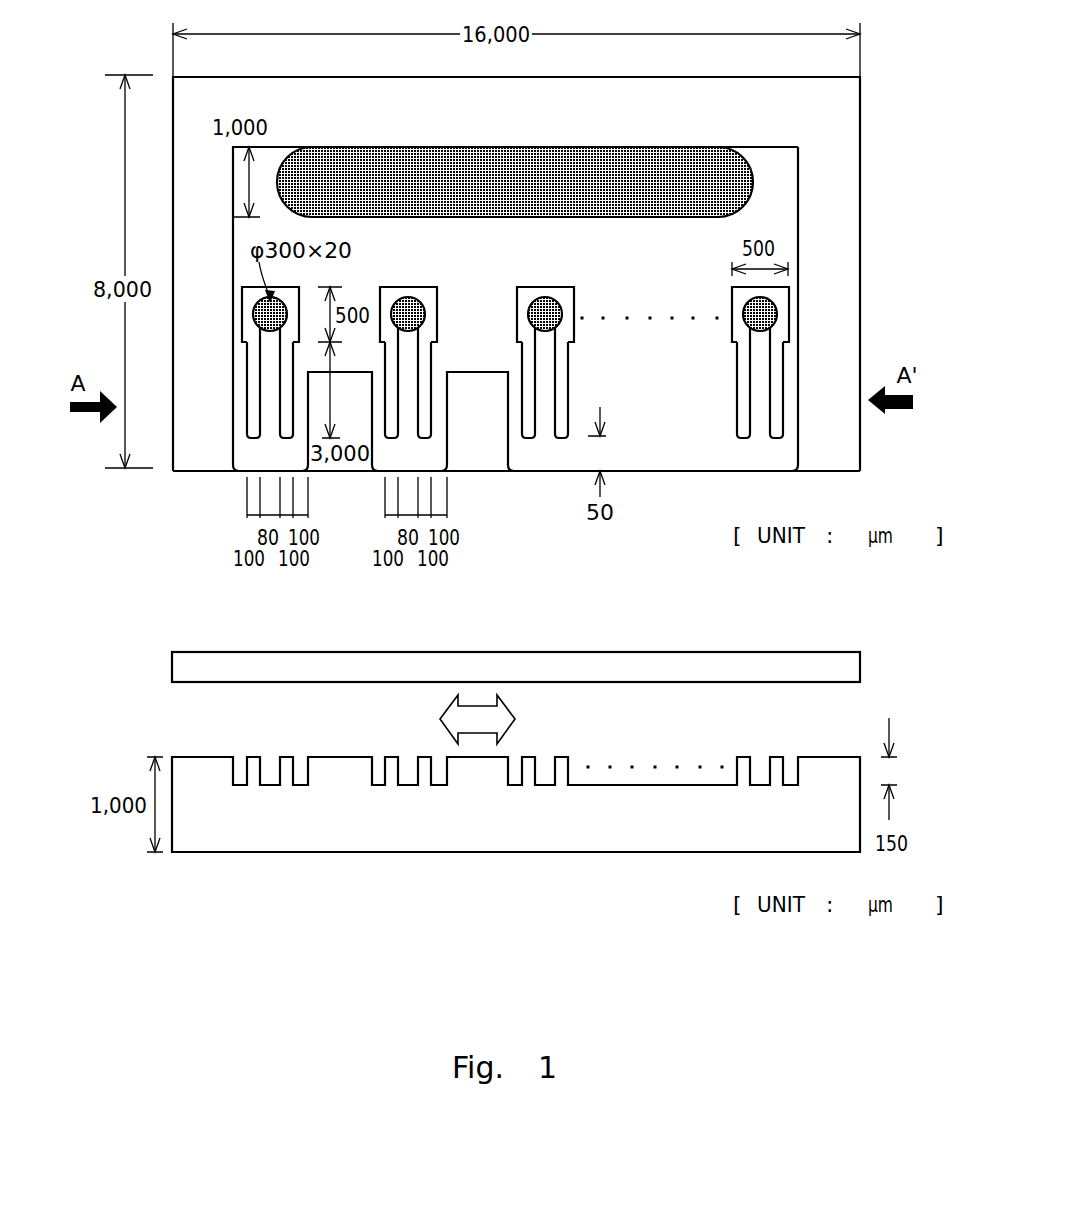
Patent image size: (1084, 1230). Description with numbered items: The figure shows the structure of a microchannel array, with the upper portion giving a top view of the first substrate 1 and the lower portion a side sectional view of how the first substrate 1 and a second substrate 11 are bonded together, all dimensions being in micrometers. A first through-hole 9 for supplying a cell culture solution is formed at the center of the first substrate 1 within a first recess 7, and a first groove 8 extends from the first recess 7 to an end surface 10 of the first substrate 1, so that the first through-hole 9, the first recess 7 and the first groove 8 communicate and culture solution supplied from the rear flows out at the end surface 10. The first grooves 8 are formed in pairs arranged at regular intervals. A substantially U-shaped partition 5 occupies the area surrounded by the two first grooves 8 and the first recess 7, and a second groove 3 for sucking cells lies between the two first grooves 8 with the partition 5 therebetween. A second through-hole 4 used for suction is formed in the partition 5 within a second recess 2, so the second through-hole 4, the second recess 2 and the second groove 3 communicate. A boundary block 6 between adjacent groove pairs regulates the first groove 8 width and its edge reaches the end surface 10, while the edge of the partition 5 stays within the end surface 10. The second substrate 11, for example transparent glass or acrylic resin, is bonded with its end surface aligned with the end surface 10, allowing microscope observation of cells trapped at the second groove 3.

The first substrate 1 is at (837, 115).
The second recess 2 is at (521, 531).
The second groove 3 is at (738, 398).
The second through-hole 4 is at (558, 305).
The partition 5 is at (775, 427).
The boundary block 6 is at (493, 448).
The first recess 7 is at (596, 230).
The first groove 8 is at (788, 377).
The first through-hole 9 is at (395, 170).
The end surface 10 is at (670, 472).
The second substrate 11 is at (703, 665).